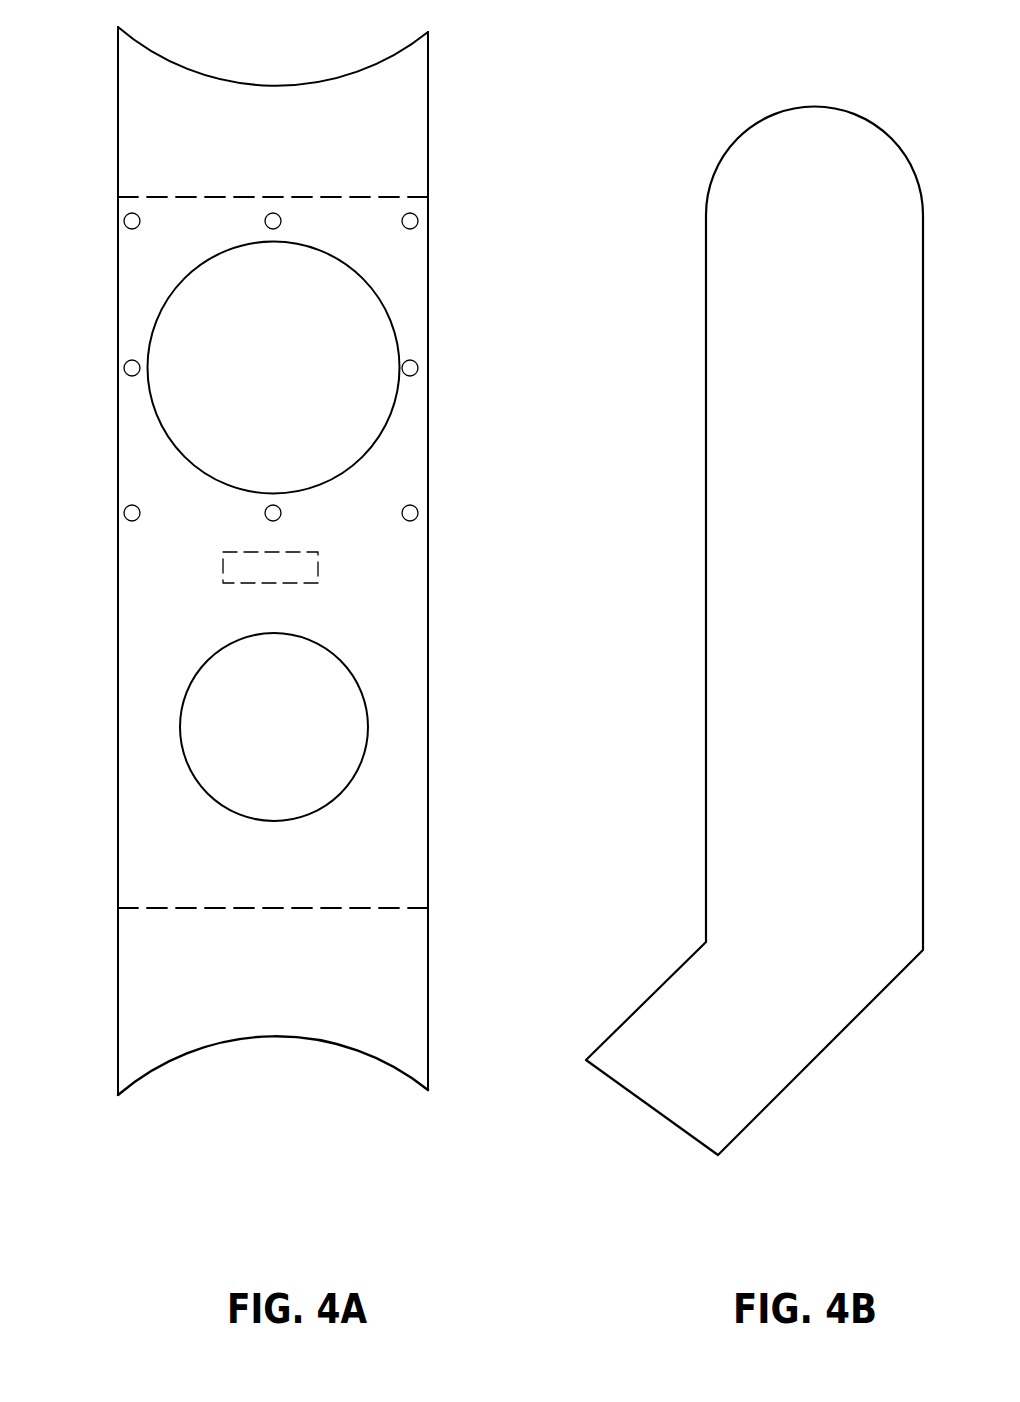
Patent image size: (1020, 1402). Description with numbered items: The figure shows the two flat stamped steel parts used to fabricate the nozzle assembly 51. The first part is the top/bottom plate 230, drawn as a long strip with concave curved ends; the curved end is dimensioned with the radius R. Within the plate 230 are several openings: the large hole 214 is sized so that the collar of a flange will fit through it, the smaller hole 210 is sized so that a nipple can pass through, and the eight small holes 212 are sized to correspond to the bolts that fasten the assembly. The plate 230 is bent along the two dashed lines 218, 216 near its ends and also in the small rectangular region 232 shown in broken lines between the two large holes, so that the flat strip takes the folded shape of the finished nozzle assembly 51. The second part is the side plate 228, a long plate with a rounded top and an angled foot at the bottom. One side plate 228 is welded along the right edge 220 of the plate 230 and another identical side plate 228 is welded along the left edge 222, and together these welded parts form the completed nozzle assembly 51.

In FIG. 4A, the nozzle assembly 51 is at (294, 622).
In FIG. 4A, the hole 210 is at (350, 672).
In FIG. 4A, the holes 212 is at (266, 520).
In FIG. 4A, the hole 214 is at (362, 279).
In FIG. 4A, the bend line 216 is at (373, 908).
In FIG. 4A, the bend line 218 is at (395, 196).
In FIG. 4A, the edge 220 is at (428, 297).
In FIG. 4A, the edge 222 is at (118, 287).
In FIG. 4B, the side plate 228 is at (720, 635).
In FIG. 4A, the top/bottom plate 230 is at (402, 580).
In FIG. 4A, the bend region 232 is at (223, 583).
In FIG. 4A, the radius of curved end R is at (197, 1053).